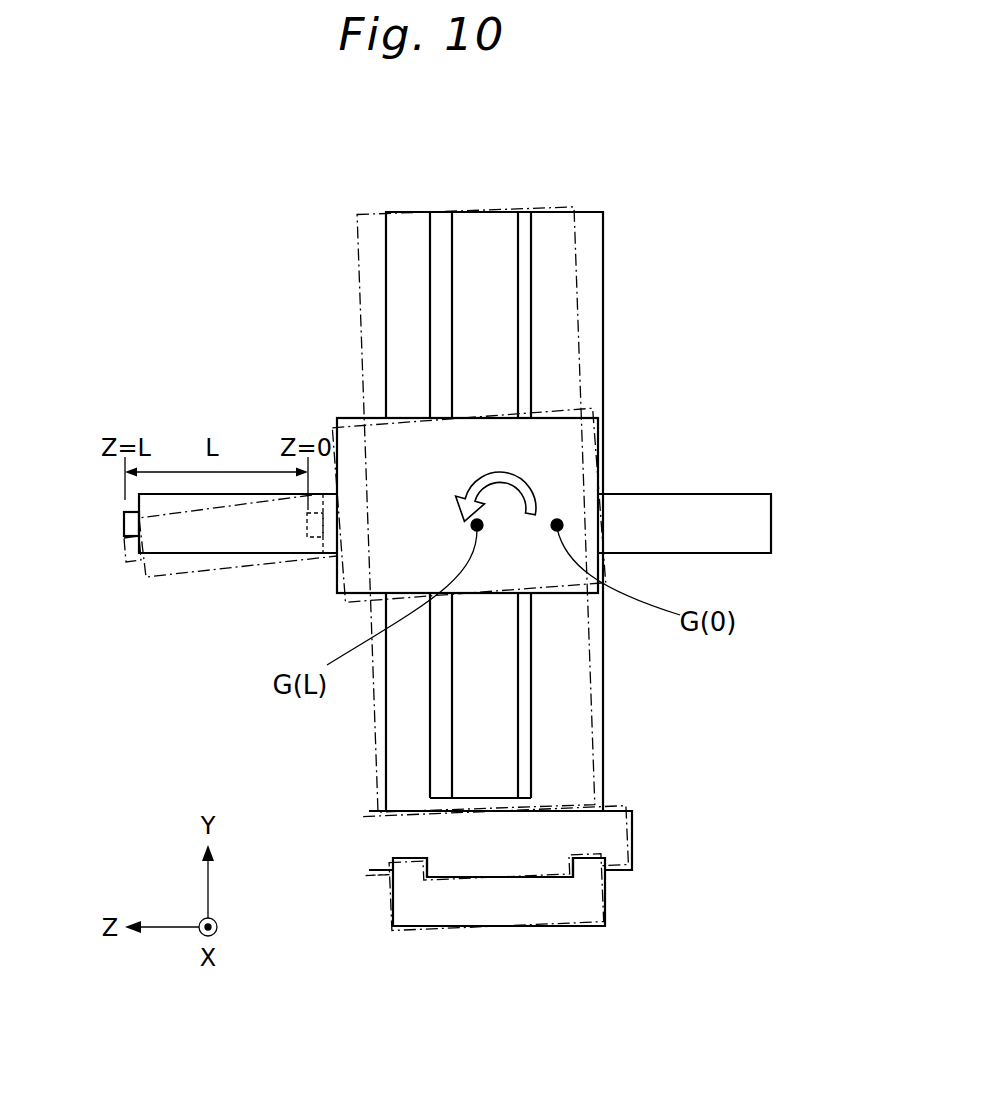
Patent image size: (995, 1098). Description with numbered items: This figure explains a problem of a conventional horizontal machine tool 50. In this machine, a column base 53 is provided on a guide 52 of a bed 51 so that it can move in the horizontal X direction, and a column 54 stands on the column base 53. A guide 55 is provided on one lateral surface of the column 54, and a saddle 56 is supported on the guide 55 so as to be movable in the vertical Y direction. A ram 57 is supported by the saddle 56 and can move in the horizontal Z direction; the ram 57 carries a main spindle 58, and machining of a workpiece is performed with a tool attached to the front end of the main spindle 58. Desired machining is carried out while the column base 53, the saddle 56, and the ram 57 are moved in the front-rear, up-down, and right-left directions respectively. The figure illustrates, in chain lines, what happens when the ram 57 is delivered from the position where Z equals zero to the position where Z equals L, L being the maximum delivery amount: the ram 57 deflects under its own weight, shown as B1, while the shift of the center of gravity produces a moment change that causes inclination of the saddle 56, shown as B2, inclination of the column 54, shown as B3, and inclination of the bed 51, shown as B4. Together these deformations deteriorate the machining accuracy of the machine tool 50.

The horizontal machine tool 50 is at (653, 229).
The bed 51 is at (503, 915).
The guide 52 is at (410, 869).
The column base 53 is at (613, 833).
The column 54 is at (400, 730).
The guide 55 is at (447, 222).
The saddle 56 is at (383, 452).
The ram 57 is at (690, 512).
The main spindle 58 is at (125, 523).
The deflection of the ram B1 is at (147, 580).
The inclination of the saddle B2 is at (345, 607).
The inclination of the column B3 is at (357, 258).
The inclination of the bed B4 is at (357, 838).